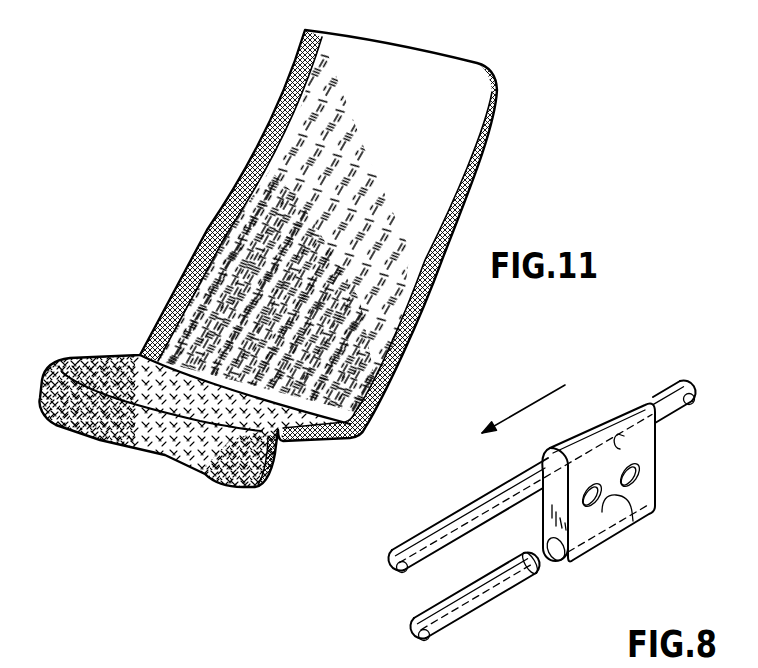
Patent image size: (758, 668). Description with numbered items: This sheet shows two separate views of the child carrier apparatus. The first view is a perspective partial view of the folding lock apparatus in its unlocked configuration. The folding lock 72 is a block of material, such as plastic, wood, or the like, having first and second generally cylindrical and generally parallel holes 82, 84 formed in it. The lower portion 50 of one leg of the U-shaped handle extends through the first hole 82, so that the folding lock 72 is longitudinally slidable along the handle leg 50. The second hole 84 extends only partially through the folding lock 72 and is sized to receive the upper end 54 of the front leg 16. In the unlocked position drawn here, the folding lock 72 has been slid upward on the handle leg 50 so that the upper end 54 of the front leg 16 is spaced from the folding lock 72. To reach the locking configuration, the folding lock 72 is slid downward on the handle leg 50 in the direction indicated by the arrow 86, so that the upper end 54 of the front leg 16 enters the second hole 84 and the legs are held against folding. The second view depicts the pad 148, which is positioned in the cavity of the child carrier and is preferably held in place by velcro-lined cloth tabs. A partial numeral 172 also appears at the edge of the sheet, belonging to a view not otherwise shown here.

In FIG. 11, the pad 148 is at (430, 192).
In FIG. 8, the lower portion of handle leg 50 is at (507, 483).
In FIG. 8, the front leg 16 is at (452, 615).
In FIG. 8, the folding lock 72 is at (605, 425).
In FIG. 8, the first hole 82 is at (621, 441).
In FIG. 8, the second hole 84 is at (632, 509).
In FIG. 8, the upper end of front leg 54 is at (537, 570).
In FIG. 8, the arrow 86 is at (535, 400).
In FIG. 8, the partial element 172 is at (288, 667).